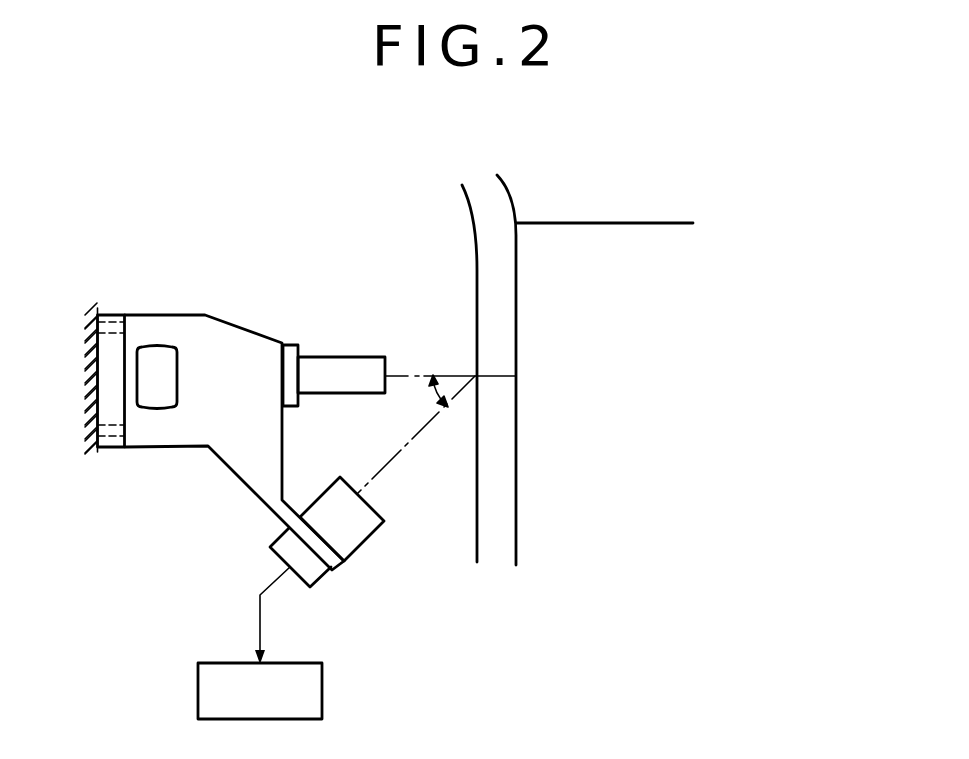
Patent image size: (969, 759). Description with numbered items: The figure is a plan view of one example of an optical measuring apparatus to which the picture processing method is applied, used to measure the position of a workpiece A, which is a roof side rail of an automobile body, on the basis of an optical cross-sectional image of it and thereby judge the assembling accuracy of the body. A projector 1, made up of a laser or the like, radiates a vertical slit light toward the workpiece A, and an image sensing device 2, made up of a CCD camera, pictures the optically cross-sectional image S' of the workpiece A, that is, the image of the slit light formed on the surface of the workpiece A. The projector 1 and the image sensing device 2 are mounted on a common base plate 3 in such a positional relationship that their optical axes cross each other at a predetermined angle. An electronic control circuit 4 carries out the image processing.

The projector 1 is at (337, 368).
The image sensing device 2 is at (360, 527).
The common base plate 3 is at (242, 457).
The electronic control circuit 4 is at (308, 682).
The workpiece A is at (482, 277).
The optical cross-sectional image S' is at (595, 370).